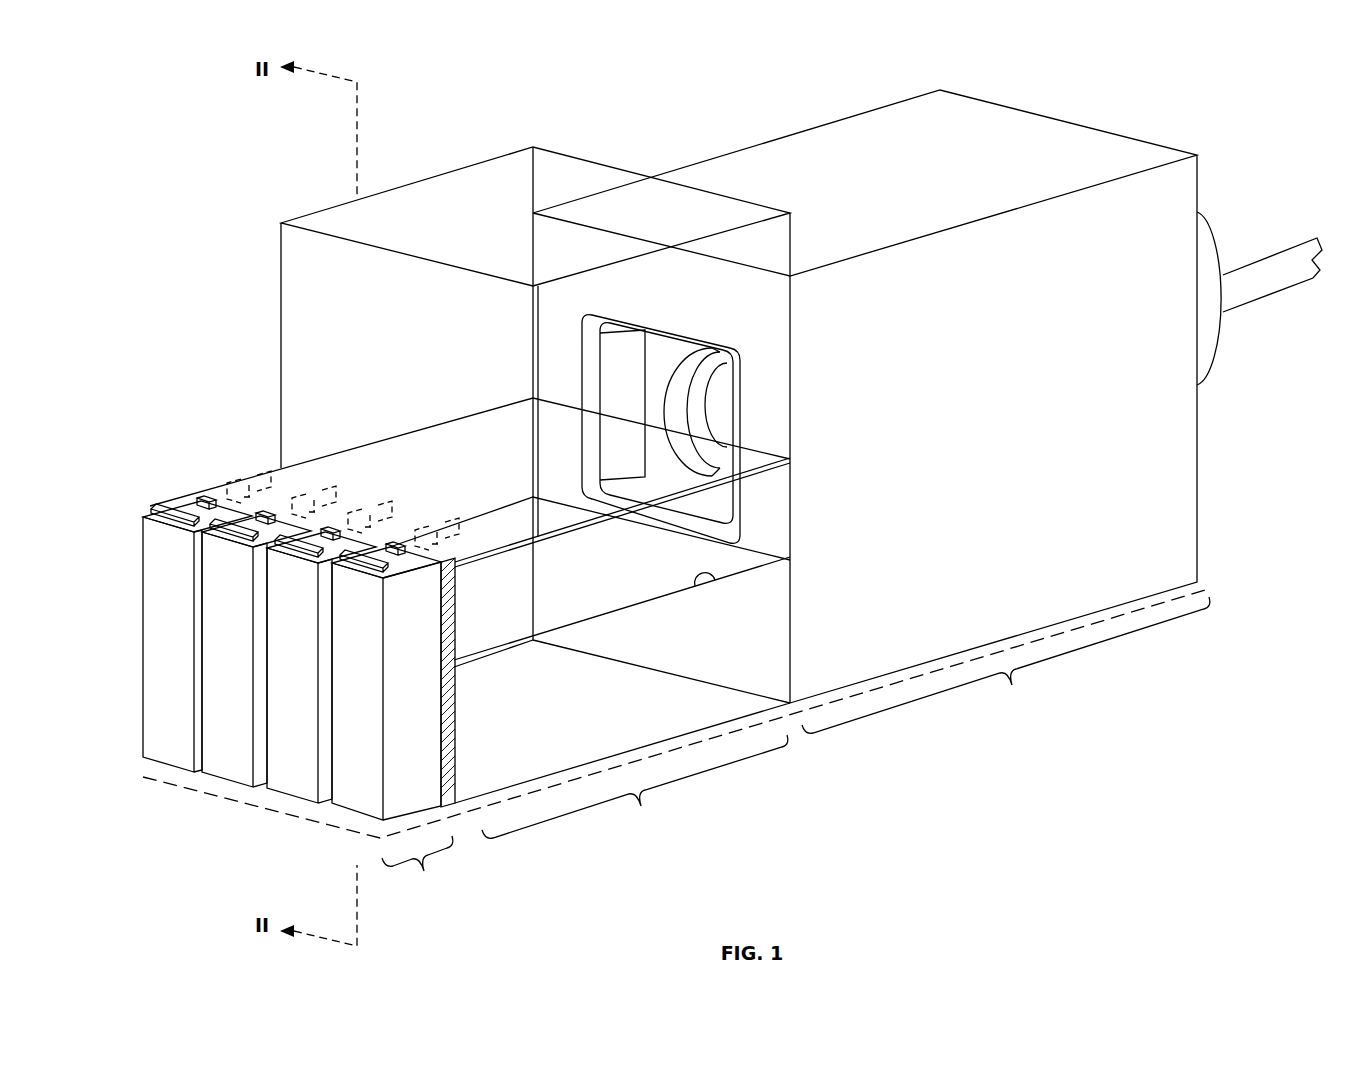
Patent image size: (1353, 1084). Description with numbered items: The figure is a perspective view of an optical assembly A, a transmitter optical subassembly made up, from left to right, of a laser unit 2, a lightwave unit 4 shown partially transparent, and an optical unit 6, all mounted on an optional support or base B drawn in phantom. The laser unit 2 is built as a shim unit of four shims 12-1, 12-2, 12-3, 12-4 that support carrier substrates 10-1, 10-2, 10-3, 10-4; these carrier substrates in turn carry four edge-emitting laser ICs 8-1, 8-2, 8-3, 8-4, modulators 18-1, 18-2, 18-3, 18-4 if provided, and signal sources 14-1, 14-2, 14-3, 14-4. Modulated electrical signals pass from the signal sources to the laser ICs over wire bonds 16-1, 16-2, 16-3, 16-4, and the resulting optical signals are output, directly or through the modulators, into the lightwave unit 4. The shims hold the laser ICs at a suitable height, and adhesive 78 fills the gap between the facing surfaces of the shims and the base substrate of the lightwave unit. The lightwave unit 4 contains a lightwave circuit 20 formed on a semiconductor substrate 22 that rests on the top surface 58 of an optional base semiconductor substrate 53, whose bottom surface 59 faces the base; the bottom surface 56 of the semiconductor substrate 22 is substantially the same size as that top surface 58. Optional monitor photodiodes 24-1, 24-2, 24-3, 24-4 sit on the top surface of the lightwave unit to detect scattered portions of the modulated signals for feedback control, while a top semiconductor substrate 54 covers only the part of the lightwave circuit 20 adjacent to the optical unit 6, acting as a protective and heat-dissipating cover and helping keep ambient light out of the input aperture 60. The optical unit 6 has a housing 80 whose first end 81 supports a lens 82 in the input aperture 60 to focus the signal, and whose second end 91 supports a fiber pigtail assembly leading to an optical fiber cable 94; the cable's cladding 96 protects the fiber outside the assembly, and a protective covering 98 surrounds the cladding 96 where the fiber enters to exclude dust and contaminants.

The laser unit 2 is at (417, 866).
The lightwave unit 4 is at (635, 786).
The optical unit 6 is at (676, 714).
The housing 80 is at (676, 714).
The laser IC 8-1 is at (146, 458).
The laser IC 8-2 is at (233, 457).
The laser IC 8-3 is at (380, 450).
The laser IC 8-4 is at (457, 508).
The modulator 18-1 is at (204, 497).
The modulator 18-2 is at (265, 515).
The modulator 18-3 is at (330, 527).
The modulator 18-4 is at (404, 545).
The carrier substrate 10-1 is at (164, 590).
The carrier substrate 10-2 is at (194, 596).
The carrier substrate 10-3 is at (312, 604).
The carrier substrate 10-4 is at (430, 683).
The shim 12-1 is at (165, 695).
The shim 12-2 is at (228, 762).
The shim 12-3 is at (297, 783).
The shim 12-4 is at (347, 793).
The signal source 14-1 is at (198, 531).
The signal source 14-2 is at (274, 546).
The signal source 14-3 is at (332, 559).
The signal source 14-4 is at (404, 575).
The wire bond 16-1 is at (205, 506).
The wire bond 16-2 is at (255, 522).
The wire bond 16-3 is at (322, 535).
The wire bond 16-4 is at (396, 549).
The monitor photodiode 24-1 is at (228, 478).
The monitor photodiode 24-2 is at (334, 489).
The monitor photodiode 24-3 is at (382, 506).
The monitor photodiode 24-4 is at (458, 534).
The lightwave circuit 20 is at (790, 459).
The semiconductor substrate 22 is at (770, 512).
The base semiconductor substrate 53 is at (682, 720).
The top semiconductor substrate 54 is at (467, 167).
The bottom surface 56 is at (752, 570).
The top surface 58 is at (720, 580).
The bottom surface 59 is at (622, 781).
The input aperture 60 is at (643, 381).
The adhesive 78 is at (455, 803).
The first end 81 is at (790, 297).
The lens 82 is at (725, 404).
The second end 91 is at (970, 97).
The optical fiber cable 94 is at (1259, 287).
The cladding 96 is at (1240, 290).
The protective covering 98 is at (1213, 355).
The optical assembly A is at (487, 105).
The base B is at (1128, 607).